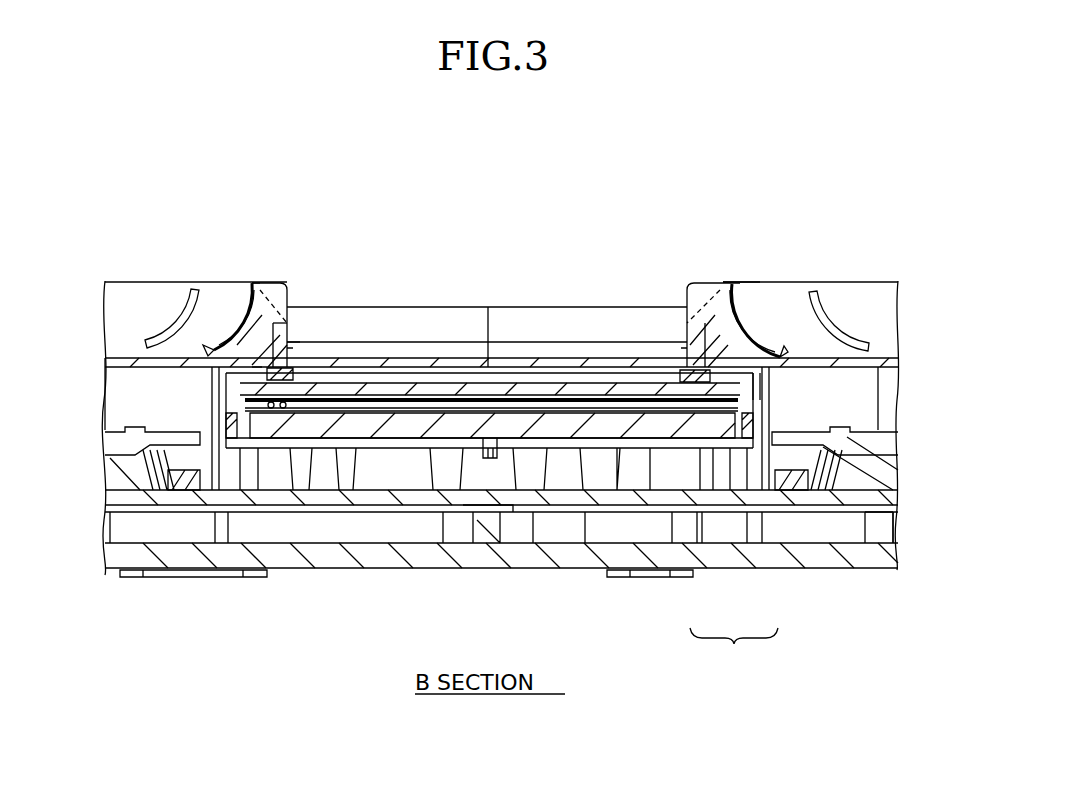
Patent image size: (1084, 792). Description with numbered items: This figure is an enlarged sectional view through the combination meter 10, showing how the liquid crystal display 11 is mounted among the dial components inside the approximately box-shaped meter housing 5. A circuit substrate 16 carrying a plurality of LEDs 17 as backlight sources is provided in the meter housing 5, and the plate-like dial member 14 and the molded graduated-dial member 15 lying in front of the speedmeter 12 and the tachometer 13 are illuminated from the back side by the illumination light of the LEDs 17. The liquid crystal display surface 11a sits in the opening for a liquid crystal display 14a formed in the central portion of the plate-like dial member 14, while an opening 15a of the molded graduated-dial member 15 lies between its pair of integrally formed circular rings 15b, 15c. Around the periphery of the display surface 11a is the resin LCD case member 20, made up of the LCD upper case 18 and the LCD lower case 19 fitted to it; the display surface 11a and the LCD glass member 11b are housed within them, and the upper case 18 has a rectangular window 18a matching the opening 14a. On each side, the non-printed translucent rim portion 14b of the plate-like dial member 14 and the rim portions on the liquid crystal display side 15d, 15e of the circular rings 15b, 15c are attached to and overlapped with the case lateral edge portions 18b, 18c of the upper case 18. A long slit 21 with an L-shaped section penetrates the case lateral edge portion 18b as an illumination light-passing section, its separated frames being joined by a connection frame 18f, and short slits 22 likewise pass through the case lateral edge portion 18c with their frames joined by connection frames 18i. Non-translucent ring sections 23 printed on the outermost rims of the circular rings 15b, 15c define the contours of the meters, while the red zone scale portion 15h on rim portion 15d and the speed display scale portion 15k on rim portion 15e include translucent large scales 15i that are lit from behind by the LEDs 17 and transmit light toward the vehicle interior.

The meter housing 5 is at (882, 560).
The combination meter 10 is at (892, 268).
The liquid crystal display 11 is at (752, 370).
The liquid crystal display surface 11a is at (577, 385).
The LCD glass member 11b is at (520, 380).
The speedmeter 12 is at (866, 270).
The tachometer 13 is at (118, 270).
The plate-like dial member 14 is at (97, 290).
The opening for a liquid crystal display 14a is at (293, 373).
The non-printed translucent rim portion 14b is at (245, 340).
The molded graduated-dial member 15 is at (300, 298).
The opening 15a is at (293, 318).
The circular ring 15b is at (294, 278).
The circular ring 15c is at (715, 300).
The rim portion on a liquid crystal display side 15d is at (300, 340).
The rim portion on a liquid crystal display side 15e is at (678, 348).
The red zone scale portion 15h is at (260, 283).
The large scales 15i is at (165, 310).
The speed display scale portion 15k is at (724, 273).
The circuit substrate 16 is at (830, 545).
The LEDs 17 is at (178, 458).
The LCD upper case 18 is at (765, 492).
The rectangular window 18a is at (335, 440).
The case lateral edge portion 18b is at (262, 300).
The case lateral edge portion 18c is at (707, 283).
The connection frame 18f is at (330, 492).
The connection frames 18i is at (642, 520).
The LCD lower case 19 is at (727, 505).
The LCD case member 20 is at (734, 650).
The long slit 21 is at (256, 355).
The short slit 22 is at (768, 300).
The ring sections 23 is at (300, 347).